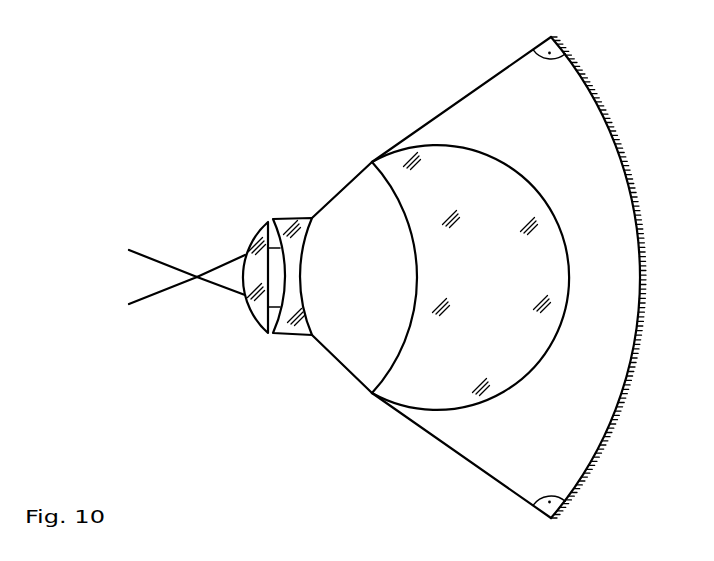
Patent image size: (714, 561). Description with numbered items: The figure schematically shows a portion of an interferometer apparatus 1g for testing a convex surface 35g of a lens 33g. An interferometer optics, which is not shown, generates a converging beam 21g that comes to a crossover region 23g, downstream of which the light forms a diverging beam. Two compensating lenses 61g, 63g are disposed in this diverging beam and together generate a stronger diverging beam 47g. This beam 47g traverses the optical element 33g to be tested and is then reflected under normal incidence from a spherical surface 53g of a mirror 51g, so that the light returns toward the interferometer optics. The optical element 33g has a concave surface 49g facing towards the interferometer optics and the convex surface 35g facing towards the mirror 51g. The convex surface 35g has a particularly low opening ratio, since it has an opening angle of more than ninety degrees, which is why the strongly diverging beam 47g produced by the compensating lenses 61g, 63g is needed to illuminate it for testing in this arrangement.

The interferometer apparatus 1g is at (240, 129).
The converging beam 21g is at (150, 257).
The crossover region 23g is at (198, 283).
The compensating lens 61g is at (262, 228).
The compensating lens 63g is at (293, 217).
The concave surface 49g is at (415, 278).
The stronger diverging beam 47g is at (372, 393).
The convex surface 35g is at (493, 400).
The lens 33g is at (392, 407).
The mirror 51g is at (593, 100).
The spherical surface 53g is at (570, 70).